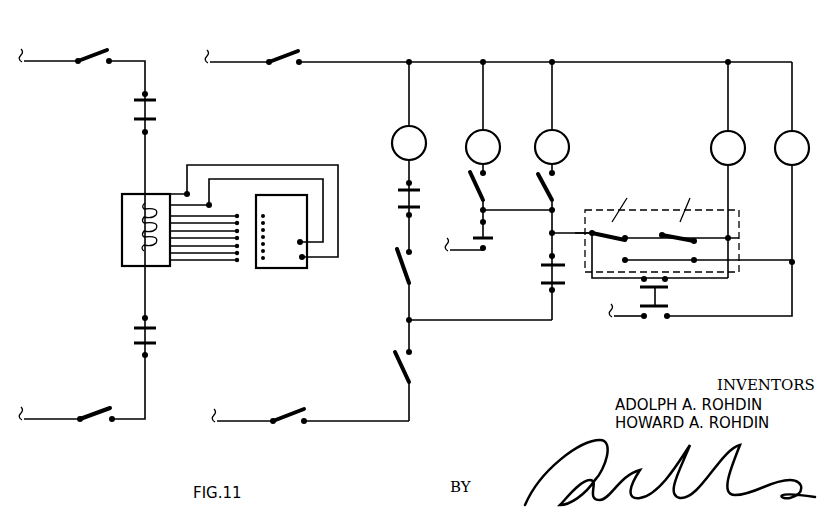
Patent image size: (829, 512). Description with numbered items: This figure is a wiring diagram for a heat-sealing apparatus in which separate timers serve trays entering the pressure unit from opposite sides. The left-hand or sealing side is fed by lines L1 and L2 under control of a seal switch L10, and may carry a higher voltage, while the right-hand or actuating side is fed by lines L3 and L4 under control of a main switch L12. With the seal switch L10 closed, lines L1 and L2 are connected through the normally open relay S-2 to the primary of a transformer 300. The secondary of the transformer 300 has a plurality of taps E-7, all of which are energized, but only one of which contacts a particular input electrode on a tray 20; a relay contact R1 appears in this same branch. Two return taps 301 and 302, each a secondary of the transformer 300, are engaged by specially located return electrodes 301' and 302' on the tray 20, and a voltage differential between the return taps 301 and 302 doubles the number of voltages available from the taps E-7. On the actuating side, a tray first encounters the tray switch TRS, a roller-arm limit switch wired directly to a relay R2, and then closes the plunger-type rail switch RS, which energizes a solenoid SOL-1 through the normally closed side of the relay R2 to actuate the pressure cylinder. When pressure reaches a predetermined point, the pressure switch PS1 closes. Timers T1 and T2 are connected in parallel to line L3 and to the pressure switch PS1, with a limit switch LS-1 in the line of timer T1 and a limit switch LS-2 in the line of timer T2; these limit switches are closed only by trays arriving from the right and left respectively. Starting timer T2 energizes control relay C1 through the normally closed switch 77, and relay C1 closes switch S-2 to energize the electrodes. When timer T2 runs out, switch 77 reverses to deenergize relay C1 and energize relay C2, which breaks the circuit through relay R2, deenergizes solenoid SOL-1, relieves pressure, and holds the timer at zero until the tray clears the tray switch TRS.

The line L1 is at (44, 61).
The seal switch L10 is at (96, 52).
The relay R1 contact R1 is at (156, 111).
The transformer 300 is at (122, 232).
The return tap 301 is at (244, 209).
The return tap 302 is at (246, 210).
The taps E-7 is at (233, 262).
The tray 20 is at (258, 269).
The return electrode 302' is at (283, 271).
The return electrode 301' is at (317, 279).
The relay S-2 is at (151, 337).
The line L2 is at (45, 419).
The line L3 is at (238, 62).
The main switch L12 is at (288, 52).
The line L4 is at (232, 421).
The solenoid SOL-1 is at (397, 130).
The relay R2 is at (398, 186).
The rail switch RS is at (401, 267).
The tray switch TRS is at (399, 367).
The timer T1 is at (483, 116).
The limit switch LS-2 is at (469, 175).
The pressure switch PS1 is at (493, 240).
The timer T2 is at (552, 116).
The limit switch LS-1 is at (547, 187).
The control relay C1 is at (728, 168).
The control relay C2 is at (738, 189).
The timer switch 77 is at (657, 298).